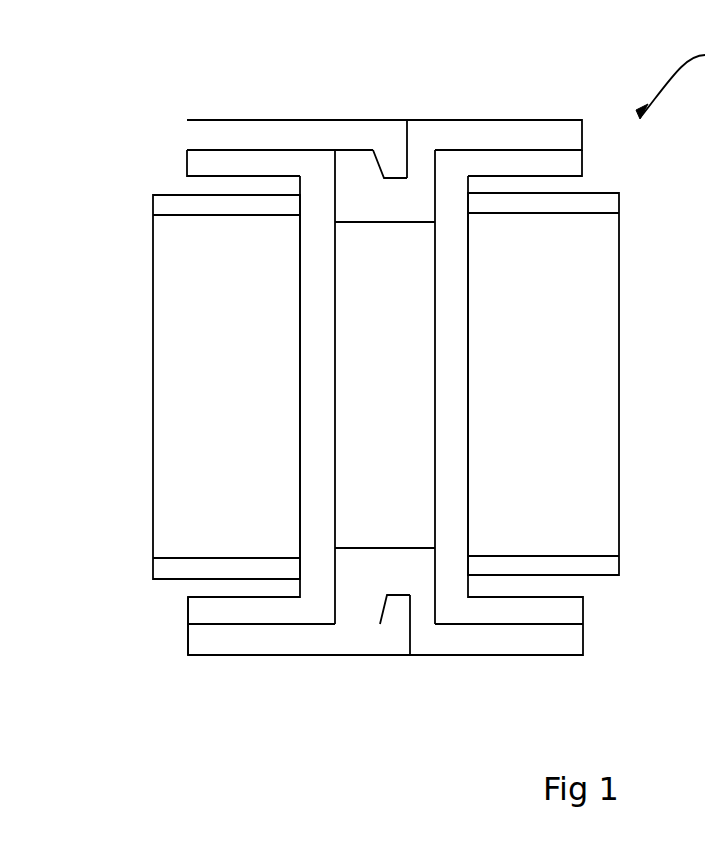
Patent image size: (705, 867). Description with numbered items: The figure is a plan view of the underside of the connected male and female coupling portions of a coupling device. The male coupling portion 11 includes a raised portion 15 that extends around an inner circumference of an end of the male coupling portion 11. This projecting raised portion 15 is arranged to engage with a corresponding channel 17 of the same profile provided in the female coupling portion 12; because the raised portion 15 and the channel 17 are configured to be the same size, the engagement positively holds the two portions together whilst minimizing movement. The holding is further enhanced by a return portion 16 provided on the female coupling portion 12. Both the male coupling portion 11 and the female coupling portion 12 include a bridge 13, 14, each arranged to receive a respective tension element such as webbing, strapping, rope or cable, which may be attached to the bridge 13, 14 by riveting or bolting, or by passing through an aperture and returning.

The male coupling portion 11 is at (315, 119).
The female coupling portion 12 is at (473, 108).
The bridge 13 is at (153, 210).
The bridge 14 is at (619, 205).
The raised portion 15 is at (393, 157).
The return portion 16 is at (365, 182).
The channel 17 is at (407, 165).